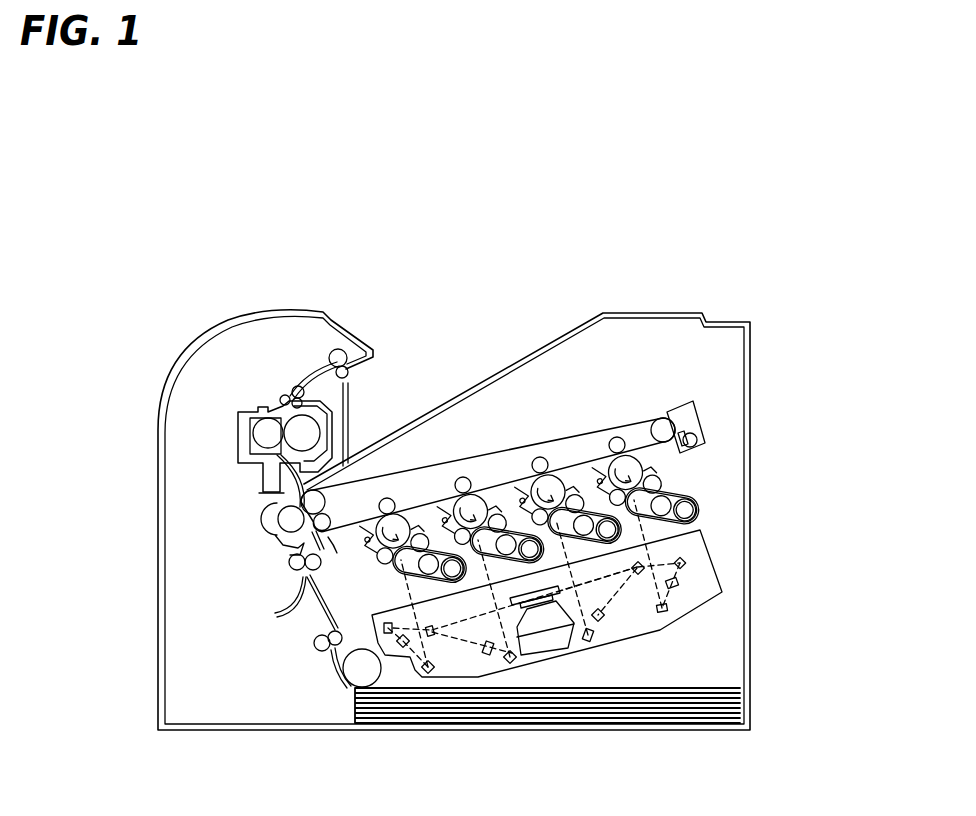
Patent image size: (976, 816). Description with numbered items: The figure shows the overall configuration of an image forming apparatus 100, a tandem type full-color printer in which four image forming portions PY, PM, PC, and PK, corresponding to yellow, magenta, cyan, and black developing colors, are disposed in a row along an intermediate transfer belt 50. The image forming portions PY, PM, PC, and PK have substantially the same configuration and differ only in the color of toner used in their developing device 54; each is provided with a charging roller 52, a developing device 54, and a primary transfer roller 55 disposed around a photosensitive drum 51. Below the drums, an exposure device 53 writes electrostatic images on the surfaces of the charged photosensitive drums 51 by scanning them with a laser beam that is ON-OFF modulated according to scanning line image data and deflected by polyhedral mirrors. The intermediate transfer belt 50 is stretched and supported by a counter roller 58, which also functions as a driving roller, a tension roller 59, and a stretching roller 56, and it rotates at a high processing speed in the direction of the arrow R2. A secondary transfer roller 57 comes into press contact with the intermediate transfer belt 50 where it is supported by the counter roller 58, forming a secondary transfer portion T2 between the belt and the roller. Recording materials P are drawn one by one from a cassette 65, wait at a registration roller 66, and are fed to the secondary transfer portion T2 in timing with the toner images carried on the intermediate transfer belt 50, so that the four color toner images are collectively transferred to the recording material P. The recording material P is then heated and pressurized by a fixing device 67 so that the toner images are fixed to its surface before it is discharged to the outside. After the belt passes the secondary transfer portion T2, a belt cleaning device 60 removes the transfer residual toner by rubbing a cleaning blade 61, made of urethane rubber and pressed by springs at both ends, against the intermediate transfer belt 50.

The image forming apparatus 100 is at (400, 296).
The intermediate transfer belt 50 is at (586, 432).
The photosensitive drum 51 is at (378, 521).
The charging roller 52 is at (385, 563).
The exposure device 53 is at (690, 617).
The developing device 54 is at (446, 582).
The primary transfer roller 55 is at (386, 498).
The stretching roller 56 is at (315, 543).
The secondary transfer roller 57 is at (276, 530).
The counter roller 58 is at (325, 500).
The tension roller 59 is at (663, 418).
The belt cleaning device 60 is at (677, 400).
The cleaning blade 61 is at (688, 447).
The cassette 65 is at (355, 693).
The registration roller 66 is at (290, 563).
The fixing device 67 is at (236, 437).
The secondary transfer portion T2 is at (290, 481).
The arrow R2 is at (476, 462).
The image forming portion PK is at (421, 512).
The image forming portion PC is at (498, 494).
The image forming portion PM is at (574, 476).
The image forming portion PY is at (651, 452).
The recording material P is at (647, 688).